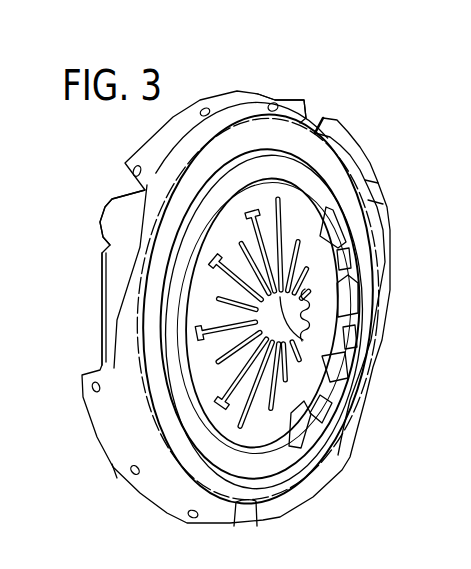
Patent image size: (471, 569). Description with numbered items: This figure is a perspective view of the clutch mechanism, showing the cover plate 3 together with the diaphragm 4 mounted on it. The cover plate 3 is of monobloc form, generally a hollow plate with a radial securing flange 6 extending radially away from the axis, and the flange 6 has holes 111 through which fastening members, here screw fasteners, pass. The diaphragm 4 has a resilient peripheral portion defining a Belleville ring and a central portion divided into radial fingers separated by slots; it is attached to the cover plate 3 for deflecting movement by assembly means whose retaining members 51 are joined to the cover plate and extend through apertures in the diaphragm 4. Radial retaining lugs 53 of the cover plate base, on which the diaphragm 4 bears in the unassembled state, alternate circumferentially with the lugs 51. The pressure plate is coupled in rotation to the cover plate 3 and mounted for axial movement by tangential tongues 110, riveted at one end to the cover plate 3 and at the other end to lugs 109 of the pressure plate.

The cover plate 3 is at (232, 76).
The diaphragm 4 is at (299, 337).
The radial securing flange 6 is at (120, 450).
The retaining members 51 is at (320, 407).
The radial retaining lugs 53 is at (303, 403).
The lugs 109 is at (105, 205).
The tangential tongues 110 is at (104, 252).
The holes 111 is at (290, 102).